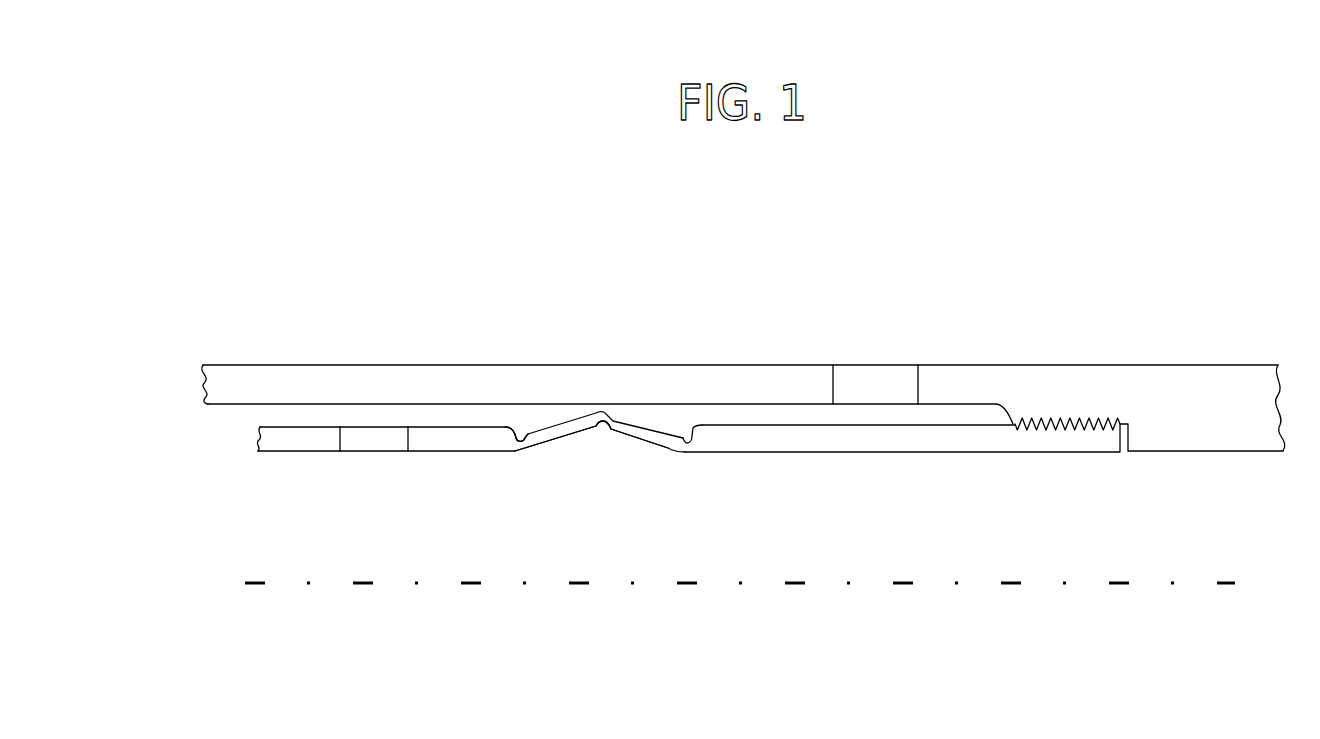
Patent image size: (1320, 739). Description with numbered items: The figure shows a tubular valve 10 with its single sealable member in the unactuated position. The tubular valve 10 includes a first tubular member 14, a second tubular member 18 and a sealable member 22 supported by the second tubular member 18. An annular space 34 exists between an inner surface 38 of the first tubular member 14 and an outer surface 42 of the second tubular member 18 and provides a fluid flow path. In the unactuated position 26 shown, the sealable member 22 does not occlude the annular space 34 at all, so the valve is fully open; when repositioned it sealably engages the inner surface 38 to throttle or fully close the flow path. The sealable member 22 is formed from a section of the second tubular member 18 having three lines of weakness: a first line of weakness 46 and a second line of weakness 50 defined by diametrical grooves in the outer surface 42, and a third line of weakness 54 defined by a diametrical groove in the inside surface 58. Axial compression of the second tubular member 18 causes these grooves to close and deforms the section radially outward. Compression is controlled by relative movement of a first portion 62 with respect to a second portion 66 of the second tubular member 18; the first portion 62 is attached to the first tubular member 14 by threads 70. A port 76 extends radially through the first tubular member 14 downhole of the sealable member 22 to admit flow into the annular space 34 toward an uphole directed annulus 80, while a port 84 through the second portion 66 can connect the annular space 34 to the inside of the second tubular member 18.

The tubular valve 10 is at (1048, 224).
The first tubular member 14 is at (1140, 360).
The second tubular member 18 is at (436, 458).
The sealable member 22 is at (566, 446).
The unactuated position 26 is at (647, 473).
The annular space 34 is at (737, 413).
The inner surface 38 is at (708, 408).
The outer surface 42 is at (768, 420).
The first line of weakness 46 is at (518, 438).
The second line of weakness 50 is at (690, 428).
The third line of weakness 54 is at (605, 425).
The inside surface 58 is at (531, 455).
The first portion 62 is at (963, 451).
The second portion 66 is at (292, 453).
The threads 70 is at (1088, 427).
The port 76 is at (918, 382).
The uphole directed annulus 80 is at (280, 416).
The port 84 is at (340, 437).